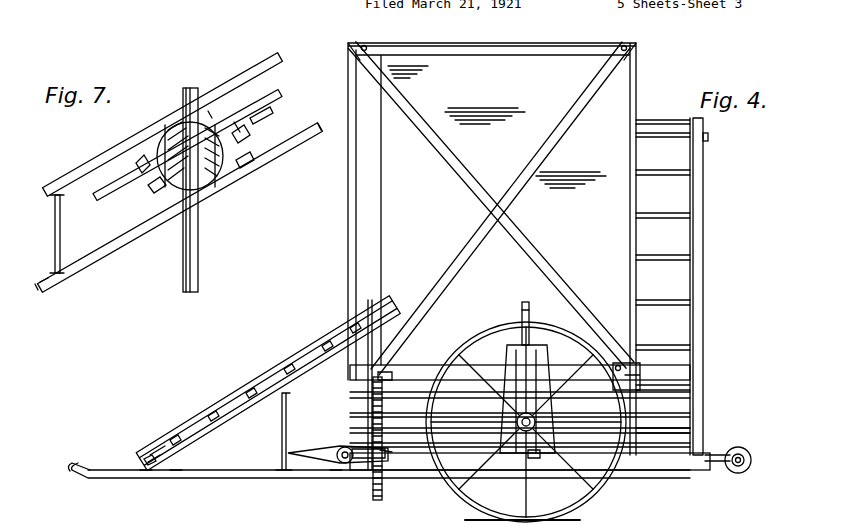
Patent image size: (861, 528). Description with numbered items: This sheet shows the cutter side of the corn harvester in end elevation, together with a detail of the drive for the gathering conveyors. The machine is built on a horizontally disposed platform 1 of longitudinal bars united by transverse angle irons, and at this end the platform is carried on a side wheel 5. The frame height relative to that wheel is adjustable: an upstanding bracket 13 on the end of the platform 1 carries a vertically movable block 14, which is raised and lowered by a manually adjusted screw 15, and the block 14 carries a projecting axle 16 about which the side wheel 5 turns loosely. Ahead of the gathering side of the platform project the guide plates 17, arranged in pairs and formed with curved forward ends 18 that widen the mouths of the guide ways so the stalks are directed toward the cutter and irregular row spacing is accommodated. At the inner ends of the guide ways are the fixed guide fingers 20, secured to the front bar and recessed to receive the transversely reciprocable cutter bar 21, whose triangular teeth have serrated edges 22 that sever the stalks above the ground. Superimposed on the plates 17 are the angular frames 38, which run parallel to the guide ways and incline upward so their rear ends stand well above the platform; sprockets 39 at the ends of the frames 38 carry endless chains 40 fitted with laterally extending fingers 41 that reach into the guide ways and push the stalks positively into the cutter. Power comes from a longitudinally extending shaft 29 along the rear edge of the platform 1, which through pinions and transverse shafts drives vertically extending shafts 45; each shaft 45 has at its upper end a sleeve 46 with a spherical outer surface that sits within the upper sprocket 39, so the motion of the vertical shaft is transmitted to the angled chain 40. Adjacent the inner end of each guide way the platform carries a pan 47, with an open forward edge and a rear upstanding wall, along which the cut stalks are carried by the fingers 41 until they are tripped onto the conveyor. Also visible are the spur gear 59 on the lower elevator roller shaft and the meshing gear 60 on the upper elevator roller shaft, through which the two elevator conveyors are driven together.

In FIG. 4, the platform 1 is at (688, 508).
In FIG. 4, the side wheel 5 is at (580, 502).
In FIG. 4, the upstanding bracket 13 is at (549, 349).
In FIG. 4, the vertically movable block 14 is at (538, 458).
In FIG. 4, the manually adjusted screw 15 is at (520, 314).
In FIG. 4, the projecting axle 16 is at (522, 431).
In FIG. 4, the guide plates 17 is at (136, 479).
In FIG. 4, the curved forward ends 18 is at (80, 474).
In FIG. 4, the fixed guide fingers 20 is at (318, 453).
In FIG. 4, the cutter bar 21 is at (345, 464).
In FIG. 4, the serrated edges 22 is at (350, 449).
In FIG. 4, the longitudinally extending shaft 29 is at (752, 458).
In FIG. 7, the angular frames 38 is at (82, 166).
In FIG. 4, the angular frames 38 is at (136, 452).
In FIG. 7, the sprockets 39 is at (140, 186).
In FIG. 4, the sprockets 39 is at (170, 432).
In FIG. 4, the endless chains 40 is at (252, 392).
In FIG. 4, the laterally extending fingers 41 is at (290, 366).
In FIG. 7, the vertically extending shafts 45 is at (199, 255).
In FIG. 4, the vertically extending shafts 45 is at (369, 394).
In FIG. 7, the sleeves 46 is at (240, 130).
In FIG. 4, the pans 47 is at (382, 452).
In FIG. 4, the spur gear 59 is at (383, 490).
In FIG. 4, the gear 60 is at (388, 379).